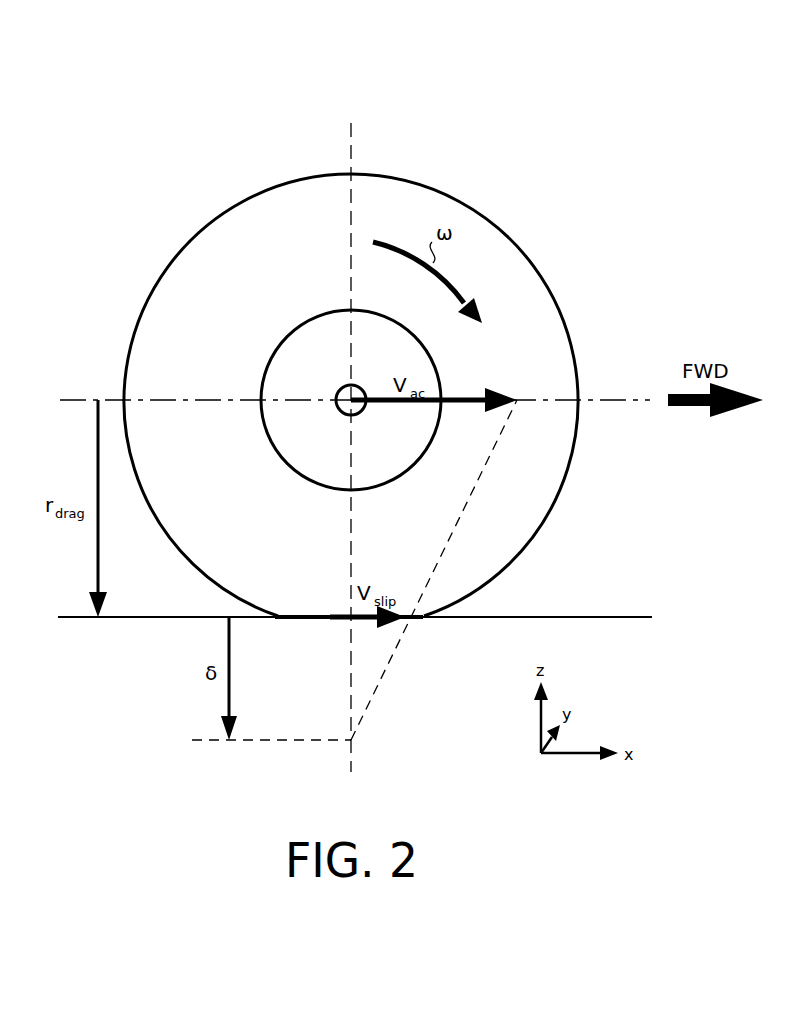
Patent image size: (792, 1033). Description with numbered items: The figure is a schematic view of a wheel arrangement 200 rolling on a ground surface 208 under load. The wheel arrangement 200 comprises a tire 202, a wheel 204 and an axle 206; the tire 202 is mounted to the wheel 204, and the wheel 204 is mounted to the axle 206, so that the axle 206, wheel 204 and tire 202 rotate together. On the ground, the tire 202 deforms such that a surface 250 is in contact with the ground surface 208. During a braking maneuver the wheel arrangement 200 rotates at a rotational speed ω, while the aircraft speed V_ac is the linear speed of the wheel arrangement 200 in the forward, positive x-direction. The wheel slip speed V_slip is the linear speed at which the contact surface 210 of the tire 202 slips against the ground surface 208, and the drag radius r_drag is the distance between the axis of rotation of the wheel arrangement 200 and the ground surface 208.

The wheel arrangement 200 is at (584, 92).
The tire 202 is at (403, 195).
The wheel 204 is at (303, 437).
The axle 206 is at (361, 412).
The ground surface 208 is at (645, 616).
The contact surface 210 is at (343, 633).
The surface 250 is at (306, 620).